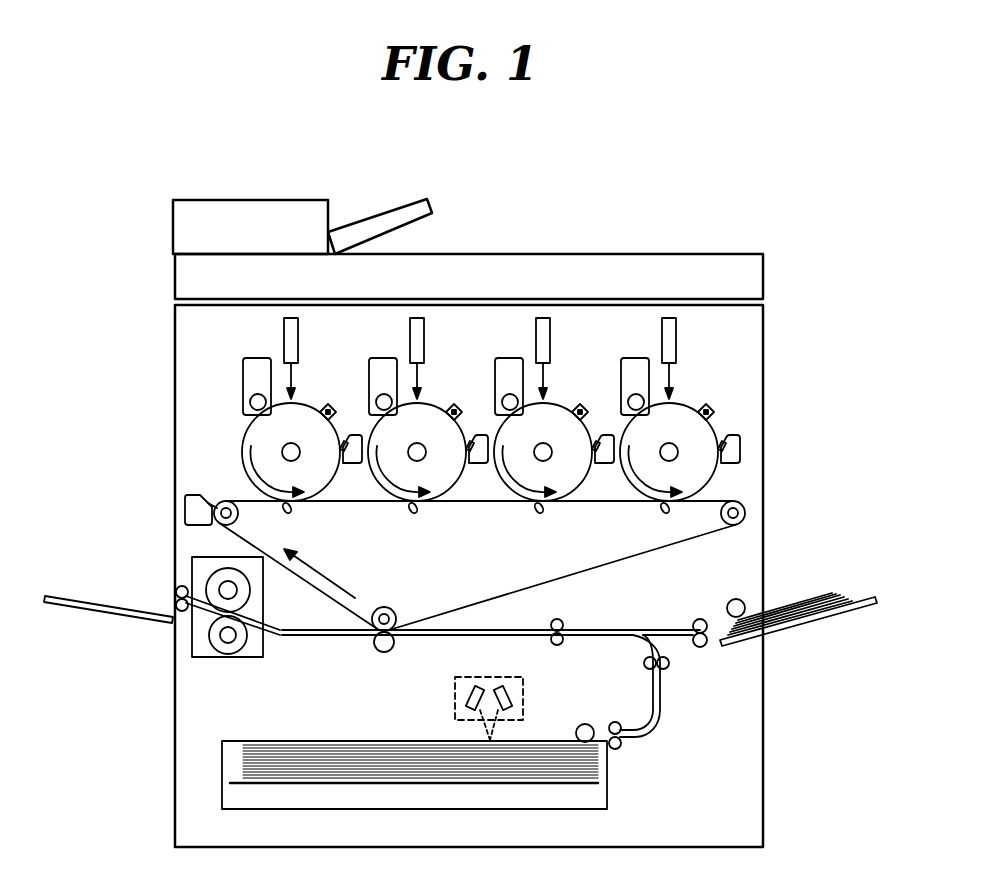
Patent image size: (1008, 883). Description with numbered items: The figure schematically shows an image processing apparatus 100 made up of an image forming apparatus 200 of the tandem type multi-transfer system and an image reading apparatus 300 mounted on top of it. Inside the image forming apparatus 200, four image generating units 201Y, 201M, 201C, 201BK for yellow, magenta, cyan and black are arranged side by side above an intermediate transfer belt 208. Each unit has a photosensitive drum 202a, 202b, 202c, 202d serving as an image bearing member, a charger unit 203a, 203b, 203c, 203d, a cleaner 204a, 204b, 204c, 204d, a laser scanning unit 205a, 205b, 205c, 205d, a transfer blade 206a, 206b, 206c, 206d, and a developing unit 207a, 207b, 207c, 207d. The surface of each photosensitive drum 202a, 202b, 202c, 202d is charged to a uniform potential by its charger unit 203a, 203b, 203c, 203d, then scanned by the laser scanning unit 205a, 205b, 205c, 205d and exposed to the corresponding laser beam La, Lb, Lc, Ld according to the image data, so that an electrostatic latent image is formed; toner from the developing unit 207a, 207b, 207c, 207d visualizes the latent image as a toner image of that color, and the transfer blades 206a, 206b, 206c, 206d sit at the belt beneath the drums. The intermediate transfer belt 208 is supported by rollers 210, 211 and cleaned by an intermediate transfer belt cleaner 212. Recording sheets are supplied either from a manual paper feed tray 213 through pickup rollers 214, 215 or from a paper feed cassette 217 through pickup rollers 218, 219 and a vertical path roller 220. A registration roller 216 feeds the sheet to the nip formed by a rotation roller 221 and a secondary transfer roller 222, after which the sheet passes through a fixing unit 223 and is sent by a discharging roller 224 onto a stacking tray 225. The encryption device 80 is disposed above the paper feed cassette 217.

The image processing apparatus 100 is at (110, 171).
The image reading apparatus 300 is at (156, 261).
The image forming apparatus 200 is at (156, 403).
The image generating unit 201Y is at (292, 312).
The image generating unit 201M is at (418, 312).
The image generating unit 201C is at (544, 312).
The image generating unit 201BK is at (670, 312).
The photosensitive drum 202a is at (248, 424).
The photosensitive drum 202b is at (432, 497).
The photosensitive drum 202c is at (558, 497).
The photosensitive drum 202d is at (710, 425).
The charger unit 203a is at (329, 404).
The charger unit 203b is at (455, 404).
The charger unit 203c is at (581, 404).
The charger unit 203d is at (707, 404).
The cleaner 204a is at (353, 465).
The cleaner 204b is at (479, 465).
The cleaner 204c is at (605, 465).
The cleaner 204d is at (742, 449).
The laser scanning unit 205a is at (298, 322).
The laser scanning unit 205b is at (424, 322).
The laser scanning unit 205c is at (550, 322).
The laser scanning unit 205d is at (676, 322).
The laser beam La is at (292, 376).
The laser beam Lb is at (418, 376).
The laser beam Lc is at (544, 376).
The laser beam Ld is at (670, 376).
The transfer blade 206a is at (290, 513).
The transfer blade 206b is at (413, 514).
The transfer blade 206c is at (539, 514).
The transfer blade 206d is at (665, 514).
The developing unit 207a is at (258, 357).
The developing unit 207b is at (384, 357).
The developing unit 207c is at (510, 357).
The developing unit 207d is at (636, 357).
The intermediate transfer belt 208 is at (565, 578).
The roller 210 is at (746, 513).
The roller 211 is at (221, 502).
The intermediate transfer belt cleaner 212 is at (184, 508).
The manual paper feed tray 213 is at (872, 597).
The pickup roller 214 is at (737, 599).
The pickup roller 215 is at (693, 627).
The registration roller 216 is at (551, 627).
The paper feed cassette 217 is at (233, 740).
The pickup roller 218 is at (582, 724).
The pickup roller 219 is at (622, 742).
The vertical path roller 220 is at (665, 670).
The rotation roller 221 is at (396, 612).
The secondary transfer roller 222 is at (393, 648).
The fixing unit 223 is at (265, 652).
The discharging roller 224 is at (176, 590).
The stacking tray 225 is at (62, 596).
The encryption device 80 is at (455, 700).